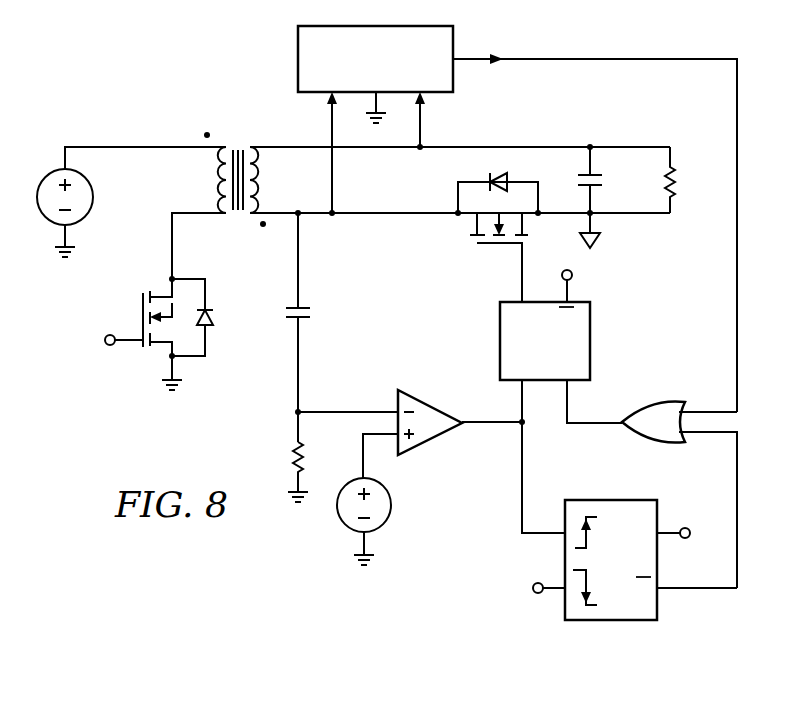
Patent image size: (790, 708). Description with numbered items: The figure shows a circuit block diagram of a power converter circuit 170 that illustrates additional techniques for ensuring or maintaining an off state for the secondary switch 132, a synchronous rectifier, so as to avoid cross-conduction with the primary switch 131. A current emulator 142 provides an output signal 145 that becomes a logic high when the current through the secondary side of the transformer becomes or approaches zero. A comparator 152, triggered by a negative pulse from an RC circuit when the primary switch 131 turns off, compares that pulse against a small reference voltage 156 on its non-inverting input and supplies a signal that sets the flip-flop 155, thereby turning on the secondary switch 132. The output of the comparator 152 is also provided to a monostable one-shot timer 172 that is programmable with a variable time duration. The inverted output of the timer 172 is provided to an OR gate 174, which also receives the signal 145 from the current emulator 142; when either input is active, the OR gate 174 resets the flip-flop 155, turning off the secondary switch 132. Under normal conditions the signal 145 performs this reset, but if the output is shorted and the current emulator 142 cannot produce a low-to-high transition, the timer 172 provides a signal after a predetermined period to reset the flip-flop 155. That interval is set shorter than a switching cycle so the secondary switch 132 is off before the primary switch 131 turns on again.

The power converter circuit 170 is at (126, 56).
The current emulator 142 is at (298, 53).
The output signal 145 is at (602, 58).
The primary switch 131 is at (112, 309).
The synchronous rectifier switch 132 is at (481, 263).
The comparator 152 is at (433, 402).
The SR flip-flop 155 is at (590, 340).
The reference voltage 156 is at (392, 503).
The OR gate 174 is at (640, 444).
The monostable one-shot timer 172 is at (610, 621).